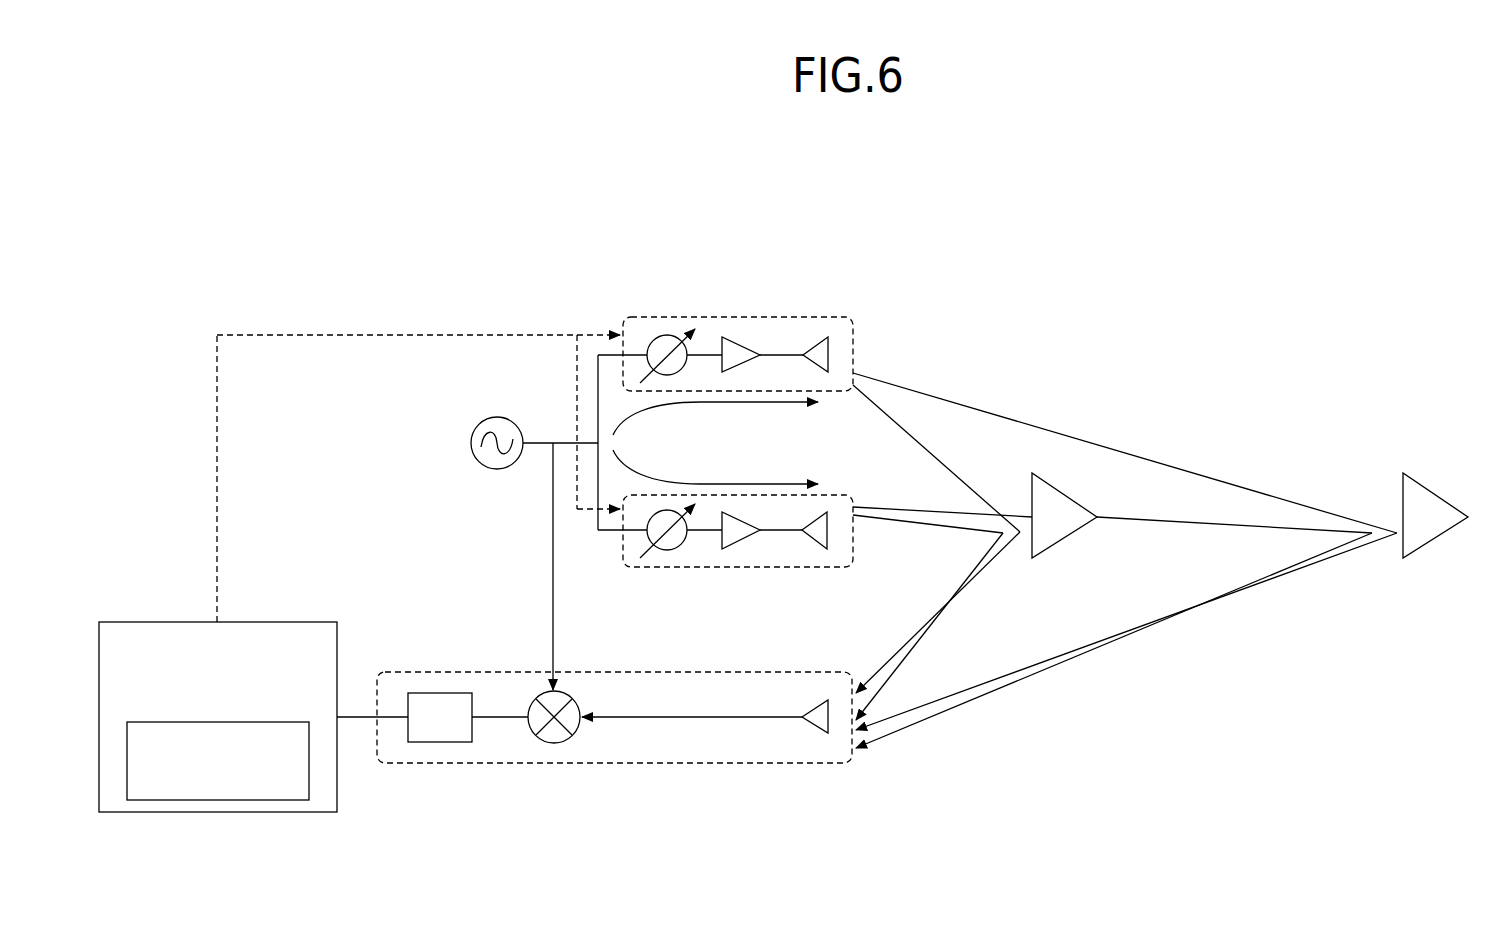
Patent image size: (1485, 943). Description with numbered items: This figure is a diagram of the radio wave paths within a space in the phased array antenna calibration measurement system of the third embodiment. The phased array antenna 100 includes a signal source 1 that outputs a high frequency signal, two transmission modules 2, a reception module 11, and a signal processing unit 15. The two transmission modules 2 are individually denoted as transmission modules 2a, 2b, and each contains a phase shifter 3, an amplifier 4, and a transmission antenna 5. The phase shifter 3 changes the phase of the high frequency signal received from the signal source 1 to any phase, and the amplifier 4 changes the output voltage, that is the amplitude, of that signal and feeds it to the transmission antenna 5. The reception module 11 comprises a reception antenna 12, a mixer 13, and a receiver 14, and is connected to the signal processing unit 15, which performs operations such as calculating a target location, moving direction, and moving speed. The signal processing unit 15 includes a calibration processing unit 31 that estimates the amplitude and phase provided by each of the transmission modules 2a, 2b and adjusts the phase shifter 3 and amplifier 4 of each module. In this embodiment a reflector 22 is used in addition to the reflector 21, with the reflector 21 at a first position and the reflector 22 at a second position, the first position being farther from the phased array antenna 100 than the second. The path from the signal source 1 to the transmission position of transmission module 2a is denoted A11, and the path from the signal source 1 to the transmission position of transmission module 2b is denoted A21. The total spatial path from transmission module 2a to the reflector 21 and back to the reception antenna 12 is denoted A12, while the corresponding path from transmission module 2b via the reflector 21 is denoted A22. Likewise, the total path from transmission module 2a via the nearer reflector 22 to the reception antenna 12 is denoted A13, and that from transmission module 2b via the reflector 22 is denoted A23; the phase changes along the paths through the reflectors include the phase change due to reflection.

The phased array antenna 100 is at (590, 225).
The signal source 1 is at (498, 417).
The transmission modules 2 is at (725, 447).
The transmission module 2a is at (725, 319).
The transmission module 2b is at (790, 568).
The phase shifter 3 is at (670, 336).
The amplifier 4 is at (736, 337).
The transmission antenna 5 is at (816, 337).
The reception module 11 is at (594, 733).
The reception antenna 12 is at (822, 734).
The mixer 13 is at (556, 743).
The receiver 14 is at (440, 742).
The signal processing unit 15 is at (218, 702).
The calibration processing unit 31 is at (286, 723).
The reflector 21 is at (1428, 492).
The reflector 22 is at (1066, 500).
The path A11 is at (715, 418).
The path A21 is at (715, 467).
The path A12 is at (1125, 551).
The path A13 is at (934, 539).
The path A22 is at (1112, 627).
The path A23 is at (928, 617).